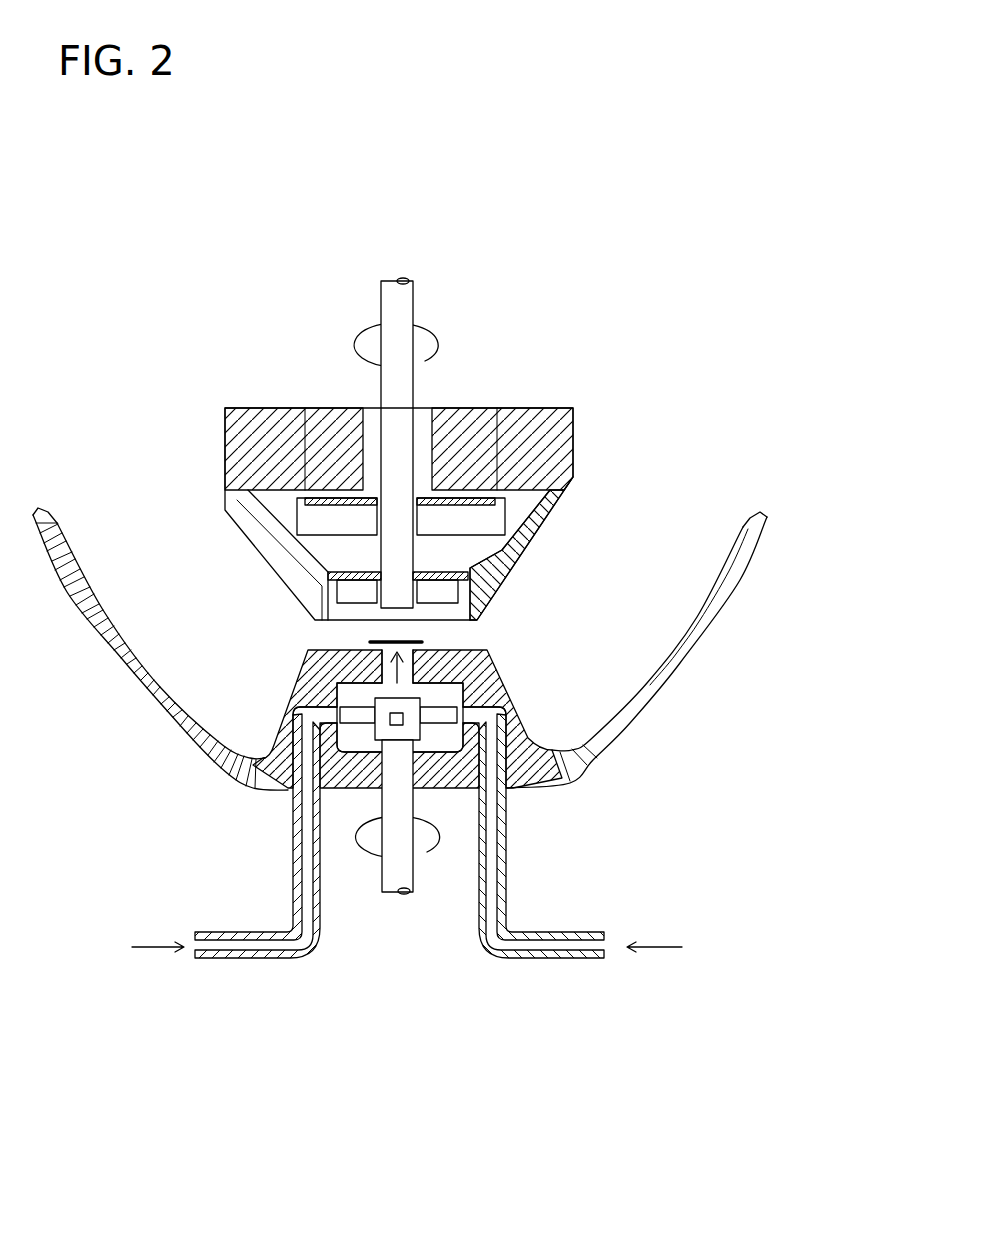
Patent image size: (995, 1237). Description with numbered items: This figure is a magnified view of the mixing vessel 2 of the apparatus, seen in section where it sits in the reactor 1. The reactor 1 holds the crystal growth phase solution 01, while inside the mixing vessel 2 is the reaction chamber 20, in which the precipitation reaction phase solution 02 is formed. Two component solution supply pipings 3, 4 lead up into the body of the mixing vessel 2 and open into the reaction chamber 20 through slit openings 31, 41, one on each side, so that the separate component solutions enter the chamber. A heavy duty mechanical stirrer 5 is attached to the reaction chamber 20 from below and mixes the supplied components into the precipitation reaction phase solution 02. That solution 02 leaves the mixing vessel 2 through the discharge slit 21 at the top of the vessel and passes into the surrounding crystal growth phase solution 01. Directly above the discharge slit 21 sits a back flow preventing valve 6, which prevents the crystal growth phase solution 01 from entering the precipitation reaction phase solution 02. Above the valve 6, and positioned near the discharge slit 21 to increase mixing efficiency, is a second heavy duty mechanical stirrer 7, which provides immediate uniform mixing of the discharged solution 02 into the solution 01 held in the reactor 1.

The reactor 1 is at (710, 630).
The crystal growth phase solution 01 is at (643, 530).
The mixing vessel 2 is at (297, 681).
The precipitation reaction phase solution 02 is at (432, 695).
The discharge slit 21 is at (455, 673).
The slit opening 31 is at (312, 715).
The slit opening 41 is at (482, 713).
The component solution supply piping 3 is at (217, 962).
The component solution supply piping 4 is at (547, 960).
The heavy duty mechanical stirrer 5 is at (417, 878).
The back flow preventing valve 6 is at (322, 635).
The heavy duty mechanical stirrer 7 is at (567, 450).
The reaction chamber 20 is at (352, 743).